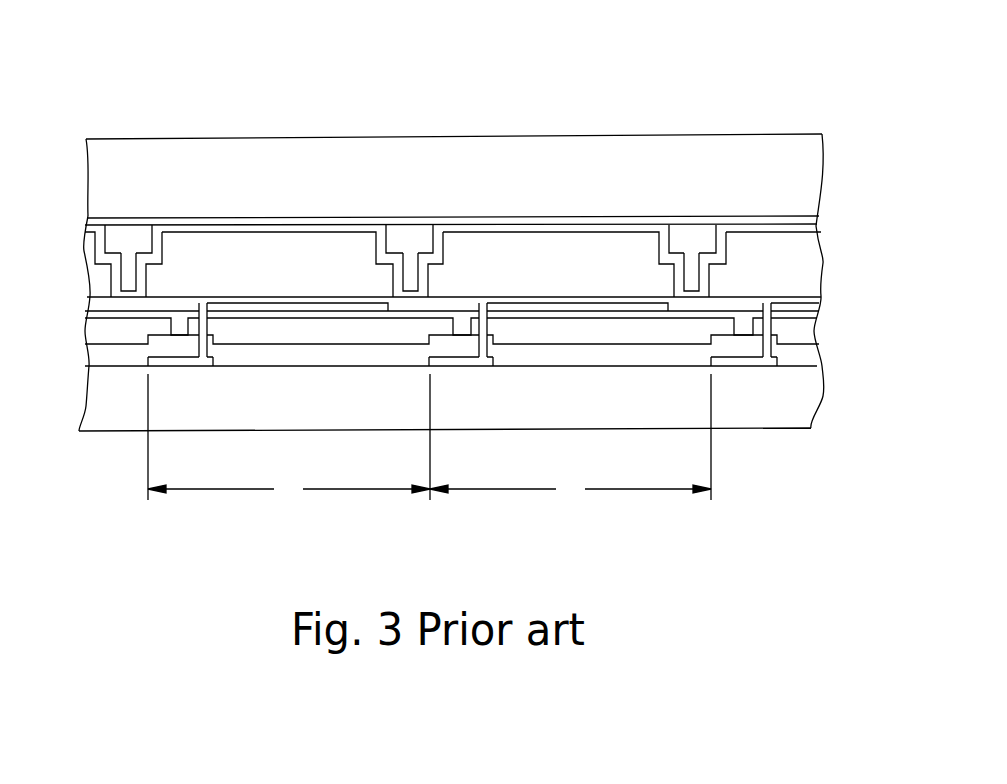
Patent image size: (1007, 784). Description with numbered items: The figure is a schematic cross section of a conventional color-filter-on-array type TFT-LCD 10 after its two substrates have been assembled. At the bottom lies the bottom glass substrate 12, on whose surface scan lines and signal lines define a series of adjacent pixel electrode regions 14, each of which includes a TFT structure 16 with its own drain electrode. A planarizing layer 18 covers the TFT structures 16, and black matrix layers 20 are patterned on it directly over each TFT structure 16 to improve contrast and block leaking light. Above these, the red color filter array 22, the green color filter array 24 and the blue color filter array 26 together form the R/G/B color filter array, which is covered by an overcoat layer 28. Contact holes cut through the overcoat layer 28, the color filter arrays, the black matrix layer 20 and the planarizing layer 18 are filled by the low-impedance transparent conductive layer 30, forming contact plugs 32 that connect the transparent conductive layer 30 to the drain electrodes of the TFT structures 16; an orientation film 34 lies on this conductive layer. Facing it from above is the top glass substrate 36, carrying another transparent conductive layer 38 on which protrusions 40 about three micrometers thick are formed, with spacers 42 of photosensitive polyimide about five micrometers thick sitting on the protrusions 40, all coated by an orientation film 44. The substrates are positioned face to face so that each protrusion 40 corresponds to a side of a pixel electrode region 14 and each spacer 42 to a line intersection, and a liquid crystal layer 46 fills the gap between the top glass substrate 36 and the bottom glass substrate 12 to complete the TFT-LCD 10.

The COA type TFT-LCD 10 is at (608, 77).
The bottom glass substrate 12 is at (480, 416).
The pixel electrode region 14 is at (429, 440).
The TFT structure 16 is at (185, 366).
The planarizing layer 18 is at (100, 363).
The black matrix layer 20 is at (163, 367).
The red color filter array 22 is at (323, 347).
The green color filter array 24 is at (615, 340).
The blue color filter array 26 is at (800, 325).
The overcoat layer 28 is at (100, 317).
The transparent conductive layer 30 is at (258, 311).
The contact plug 32 is at (203, 317).
The orientation film 34 is at (100, 297).
The top glass substrate 36 is at (482, 190).
The transparent conductive layer 38 is at (100, 219).
The protrusion 40 is at (140, 250).
The spacer 42 is at (405, 281).
The orientation film 44 is at (804, 225).
The liquid crystal layer 46 is at (106, 277).